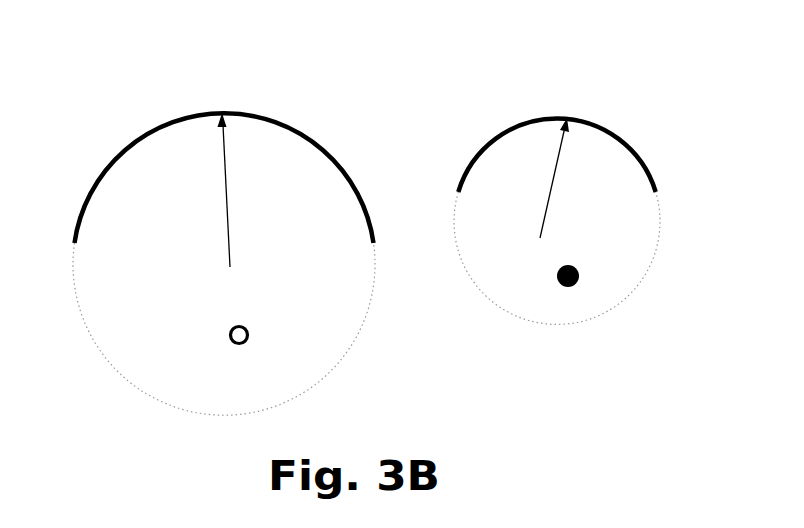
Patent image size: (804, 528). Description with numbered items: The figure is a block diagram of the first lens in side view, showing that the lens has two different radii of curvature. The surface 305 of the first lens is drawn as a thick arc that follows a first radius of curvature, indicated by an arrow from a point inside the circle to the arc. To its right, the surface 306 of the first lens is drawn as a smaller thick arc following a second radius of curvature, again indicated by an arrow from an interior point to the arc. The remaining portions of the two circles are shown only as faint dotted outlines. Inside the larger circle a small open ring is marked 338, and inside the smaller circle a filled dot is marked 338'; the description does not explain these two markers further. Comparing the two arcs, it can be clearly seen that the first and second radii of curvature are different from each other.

The surface of the first lens 305 is at (158, 117).
The surface of the first lens 306 is at (630, 103).
The center / pad marker of first region 338 is at (195, 324).
The center / pad marker of second region 338' is at (611, 295).